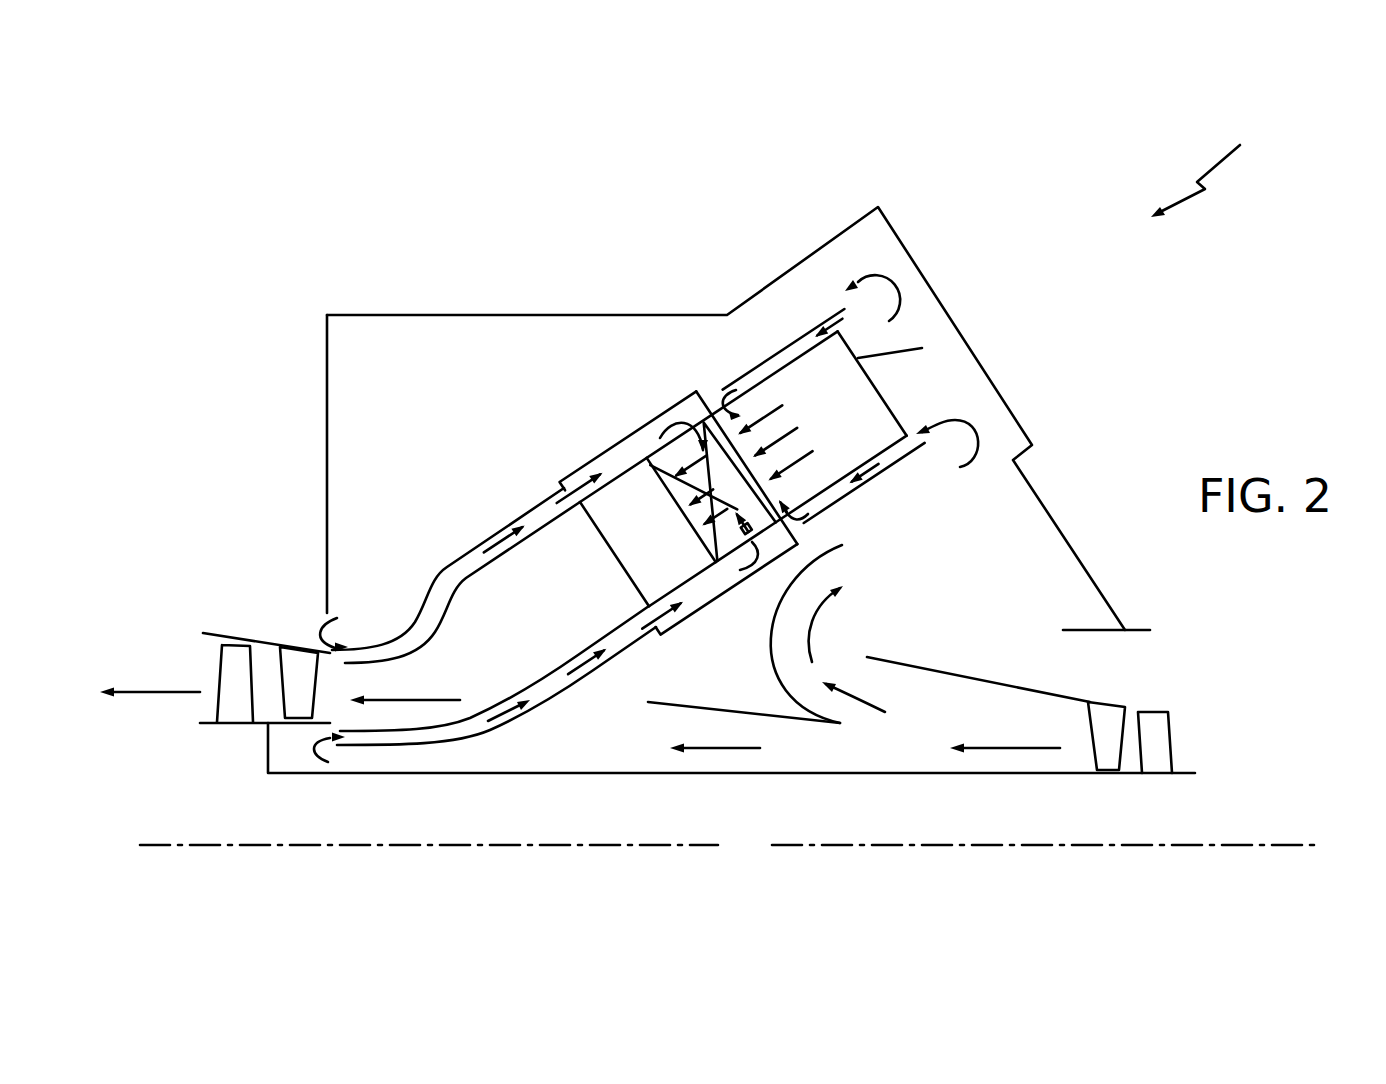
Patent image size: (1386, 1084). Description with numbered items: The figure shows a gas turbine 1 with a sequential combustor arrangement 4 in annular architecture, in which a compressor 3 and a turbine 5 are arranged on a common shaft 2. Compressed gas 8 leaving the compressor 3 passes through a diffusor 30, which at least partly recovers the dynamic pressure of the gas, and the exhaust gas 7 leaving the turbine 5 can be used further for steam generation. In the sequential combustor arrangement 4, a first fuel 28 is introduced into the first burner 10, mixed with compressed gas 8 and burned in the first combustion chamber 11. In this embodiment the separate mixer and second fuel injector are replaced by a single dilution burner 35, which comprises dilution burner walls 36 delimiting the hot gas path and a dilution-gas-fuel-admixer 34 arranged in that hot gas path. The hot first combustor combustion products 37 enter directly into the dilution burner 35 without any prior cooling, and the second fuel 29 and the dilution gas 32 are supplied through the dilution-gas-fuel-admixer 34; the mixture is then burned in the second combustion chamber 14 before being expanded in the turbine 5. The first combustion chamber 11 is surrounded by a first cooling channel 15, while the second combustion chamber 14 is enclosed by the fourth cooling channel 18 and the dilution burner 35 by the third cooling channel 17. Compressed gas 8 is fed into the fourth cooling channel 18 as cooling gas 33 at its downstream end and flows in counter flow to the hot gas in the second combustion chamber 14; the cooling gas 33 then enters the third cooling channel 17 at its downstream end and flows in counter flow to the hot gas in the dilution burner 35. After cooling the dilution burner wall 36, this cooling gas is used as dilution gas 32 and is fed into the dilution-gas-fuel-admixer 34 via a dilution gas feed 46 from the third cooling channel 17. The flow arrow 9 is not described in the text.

The gas turbine 1 is at (612, 240).
The shaft 2 is at (730, 845).
The compressor 3 is at (1170, 725).
The sequential combustor arrangement 4 is at (1182, 149).
The turbine 5 is at (267, 660).
The exhaust gas 7 is at (150, 679).
The compressed gas 8 is at (865, 737).
The flow arrow 9 is at (405, 688).
The first burner 10 is at (890, 407).
The first combustion chamber 11 is at (809, 425).
The second combustion chamber 14 is at (432, 476).
The first cooling channel 15 is at (788, 360).
The third cooling channel 17 is at (605, 468).
The fourth cooling channel 18 is at (440, 565).
The first fuel 28 is at (946, 330).
The second fuel 29 is at (673, 452).
The diffusor 30 is at (914, 714).
The dilution gas 32 is at (712, 553).
The cooling gas 33 is at (572, 703).
The dilution-gas-fuel-admixer 34 is at (722, 420).
The dilution burner 35 is at (648, 532).
The dilution burner wall 36 is at (622, 447).
The first combustor combustion products 37 is at (788, 437).
The dilution gas feed 46 is at (697, 450).